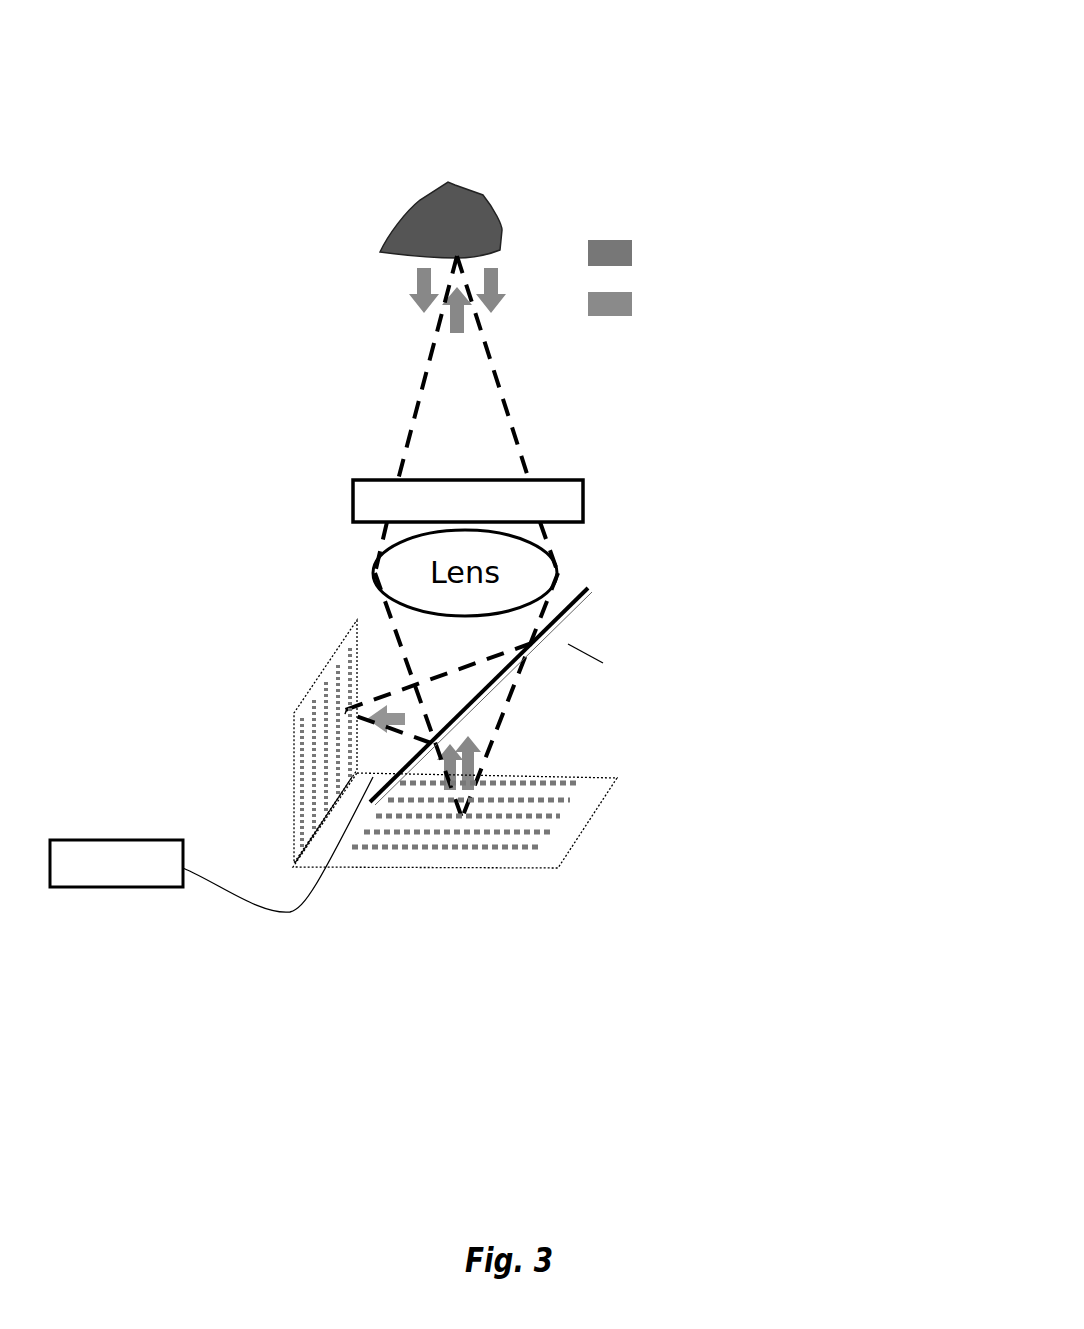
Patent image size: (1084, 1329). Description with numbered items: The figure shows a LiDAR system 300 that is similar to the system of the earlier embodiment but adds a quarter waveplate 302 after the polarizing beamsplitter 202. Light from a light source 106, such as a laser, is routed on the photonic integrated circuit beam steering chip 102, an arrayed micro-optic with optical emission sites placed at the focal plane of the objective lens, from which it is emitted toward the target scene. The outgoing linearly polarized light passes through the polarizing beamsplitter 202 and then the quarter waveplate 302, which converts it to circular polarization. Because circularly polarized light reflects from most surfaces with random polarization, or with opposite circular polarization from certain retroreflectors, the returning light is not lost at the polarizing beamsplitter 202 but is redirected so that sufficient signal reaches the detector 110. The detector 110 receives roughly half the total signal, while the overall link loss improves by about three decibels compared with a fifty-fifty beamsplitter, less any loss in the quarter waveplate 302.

The LiDAR system 300 is at (728, 36).
The ¼ waveplate 302 is at (598, 502).
The polarizing beamsplitter 202 is at (575, 640).
The detector 110 is at (247, 743).
The light source 106 is at (162, 828).
The photonic integrated circuit beam steering chip 102 is at (615, 828).